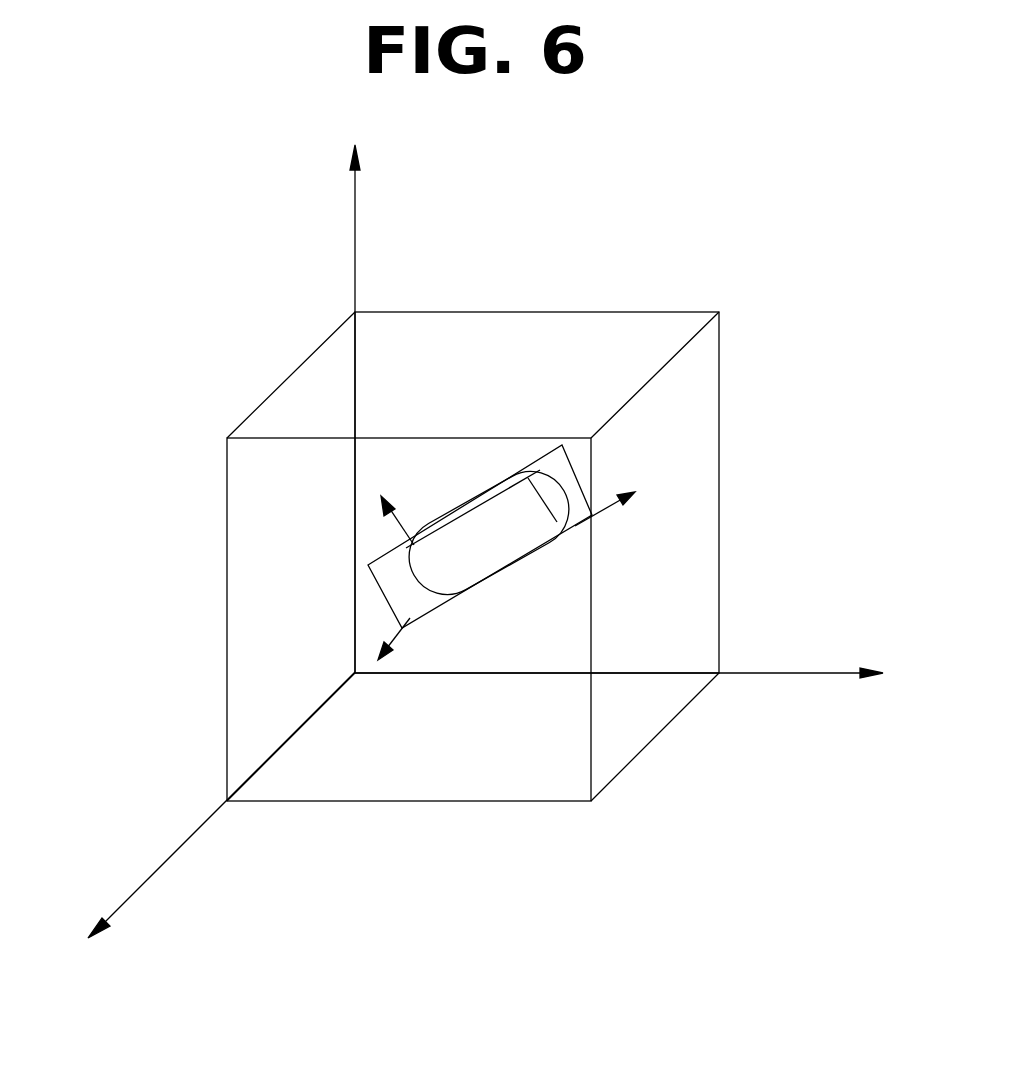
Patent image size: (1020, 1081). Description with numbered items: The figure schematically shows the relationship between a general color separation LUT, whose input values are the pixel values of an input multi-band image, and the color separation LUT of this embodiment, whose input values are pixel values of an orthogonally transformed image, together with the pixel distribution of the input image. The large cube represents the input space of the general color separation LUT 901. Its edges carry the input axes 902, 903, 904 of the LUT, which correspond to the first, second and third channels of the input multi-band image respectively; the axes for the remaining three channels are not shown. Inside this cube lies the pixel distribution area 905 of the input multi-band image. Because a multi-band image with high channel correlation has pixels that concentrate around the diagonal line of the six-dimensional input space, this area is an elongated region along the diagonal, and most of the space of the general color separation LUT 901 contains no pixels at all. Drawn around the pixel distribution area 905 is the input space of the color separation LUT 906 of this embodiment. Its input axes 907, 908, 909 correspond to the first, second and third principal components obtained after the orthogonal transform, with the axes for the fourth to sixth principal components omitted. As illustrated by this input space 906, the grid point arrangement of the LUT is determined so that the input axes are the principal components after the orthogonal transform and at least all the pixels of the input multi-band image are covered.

The input space of the general color separation LUT 901 is at (641, 312).
The input axis of the LUT corresponding to channel 1 902 is at (155, 871).
The input axis of the LUT corresponding to channel 2 903 is at (810, 673).
The input axis of the LUT corresponding to channel 3 904 is at (355, 197).
The pixel distribution area of the input multi-band image 905 is at (380, 590).
The input space of the color separation LUT 906 is at (537, 454).
The input axis of the LUT corresponding to the first principal component 907 is at (607, 510).
The input axis of the LUT corresponding to the second principal component 908 is at (398, 516).
The input axis of the LUT corresponding to the third principal component 909 is at (403, 629).